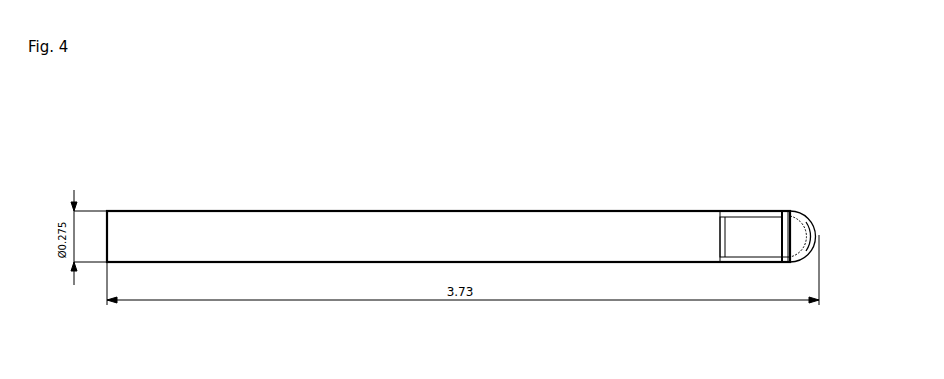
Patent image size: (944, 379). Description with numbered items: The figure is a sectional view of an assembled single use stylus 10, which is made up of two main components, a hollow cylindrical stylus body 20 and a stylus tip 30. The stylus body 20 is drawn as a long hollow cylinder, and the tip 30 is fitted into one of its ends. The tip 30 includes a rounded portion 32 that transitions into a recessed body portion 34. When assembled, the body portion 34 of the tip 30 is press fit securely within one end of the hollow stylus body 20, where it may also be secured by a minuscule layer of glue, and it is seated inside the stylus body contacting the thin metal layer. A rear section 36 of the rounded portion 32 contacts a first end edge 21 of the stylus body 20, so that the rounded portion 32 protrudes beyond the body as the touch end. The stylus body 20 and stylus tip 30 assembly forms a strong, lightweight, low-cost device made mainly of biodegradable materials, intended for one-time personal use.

The single use stylus 10 is at (412, 208).
The hollow cylindrical stylus body 20 is at (262, 263).
The first end edge 21 is at (781, 212).
The stylus tip 30 is at (789, 210).
The rounded portion 32 is at (815, 232).
The body portion 34 is at (740, 212).
The rear section 36 is at (784, 263).